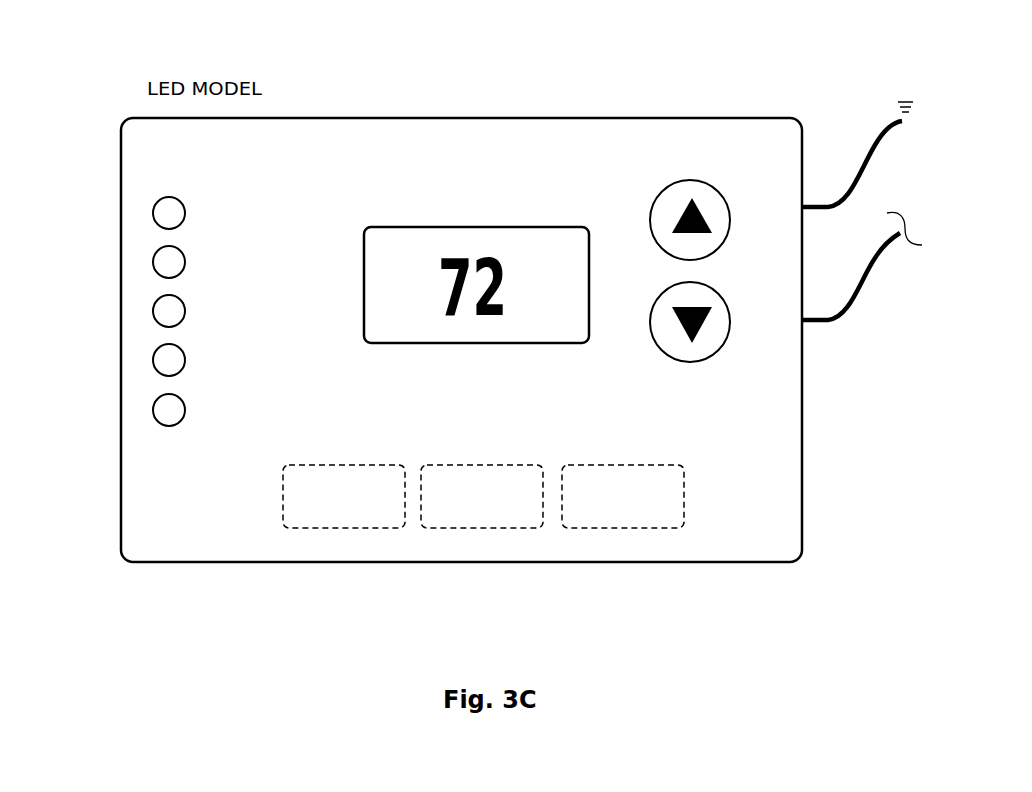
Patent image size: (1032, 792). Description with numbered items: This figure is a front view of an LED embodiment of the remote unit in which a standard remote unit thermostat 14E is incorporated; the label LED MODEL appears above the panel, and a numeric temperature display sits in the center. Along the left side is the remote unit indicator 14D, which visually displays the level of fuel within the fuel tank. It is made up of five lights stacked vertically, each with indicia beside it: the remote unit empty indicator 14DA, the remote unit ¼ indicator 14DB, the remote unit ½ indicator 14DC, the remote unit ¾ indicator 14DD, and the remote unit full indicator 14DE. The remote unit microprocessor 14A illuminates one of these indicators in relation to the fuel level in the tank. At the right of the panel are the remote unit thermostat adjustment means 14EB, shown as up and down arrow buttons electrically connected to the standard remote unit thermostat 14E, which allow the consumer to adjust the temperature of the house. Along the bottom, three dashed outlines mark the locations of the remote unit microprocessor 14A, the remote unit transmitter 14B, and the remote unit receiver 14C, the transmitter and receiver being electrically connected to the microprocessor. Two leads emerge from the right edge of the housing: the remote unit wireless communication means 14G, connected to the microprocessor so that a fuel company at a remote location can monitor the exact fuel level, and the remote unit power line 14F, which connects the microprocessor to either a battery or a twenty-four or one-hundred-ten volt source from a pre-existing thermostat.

The standard remote unit thermostat 14E is at (489, 38).
The remote unit indicator 14D is at (148, 249).
The remote unit empty indicator 14DA is at (153, 212).
The remote unit ¼ indicator 14DB is at (153, 261).
The remote unit ½ indicator 14DC is at (153, 310).
The remote unit ¾ indicator 14DD is at (153, 359).
The remote unit full indicator 14DE is at (153, 409).
The remote unit thermostat adjustment means 14EB is at (720, 317).
The remote unit wireless communication means 14G is at (832, 208).
The remote unit power line 14F is at (858, 290).
The remote unit microprocessor 14A is at (323, 508).
The remote unit transmitter 14B is at (483, 510).
The remote unit receiver 14C is at (648, 510).